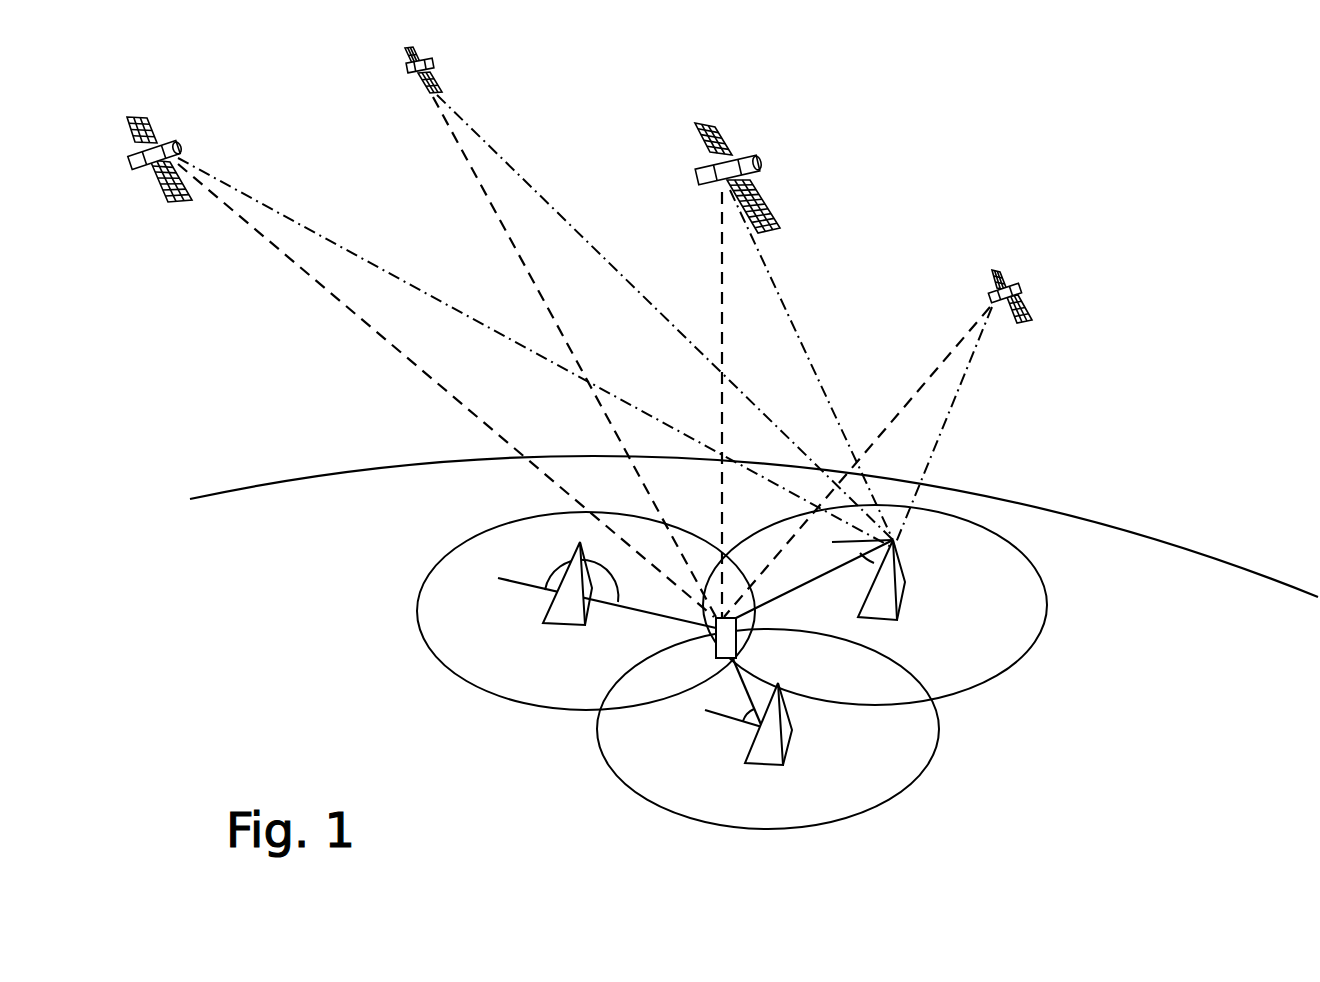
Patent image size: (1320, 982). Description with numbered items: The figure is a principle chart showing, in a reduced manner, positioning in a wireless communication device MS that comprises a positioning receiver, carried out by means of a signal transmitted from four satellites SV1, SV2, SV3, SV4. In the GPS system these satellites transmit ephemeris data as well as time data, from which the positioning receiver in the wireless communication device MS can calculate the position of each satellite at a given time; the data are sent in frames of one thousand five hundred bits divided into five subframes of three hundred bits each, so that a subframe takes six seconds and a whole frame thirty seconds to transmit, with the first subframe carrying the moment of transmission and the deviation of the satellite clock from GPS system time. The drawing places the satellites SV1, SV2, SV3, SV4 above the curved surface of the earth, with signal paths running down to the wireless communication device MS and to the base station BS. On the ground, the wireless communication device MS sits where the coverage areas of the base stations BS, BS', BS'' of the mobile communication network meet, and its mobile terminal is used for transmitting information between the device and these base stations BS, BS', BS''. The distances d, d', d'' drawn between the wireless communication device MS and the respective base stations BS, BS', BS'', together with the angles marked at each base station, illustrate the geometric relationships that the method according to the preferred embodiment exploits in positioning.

The satellite SV1 is at (131, 140).
The satellite SV2 is at (413, 49).
The satellite SV3 is at (737, 157).
The satellite SV4 is at (1021, 270).
The wireless communication device MS is at (753, 647).
The base station BS is at (925, 601).
The base station BS' is at (550, 620).
The base station BS'' is at (768, 779).
The distance between mobile station and base station BS d is at (814, 579).
The distance between mobile station and base station BS' d' is at (607, 622).
The distance between mobile station and base station BS'' d'' is at (712, 716).